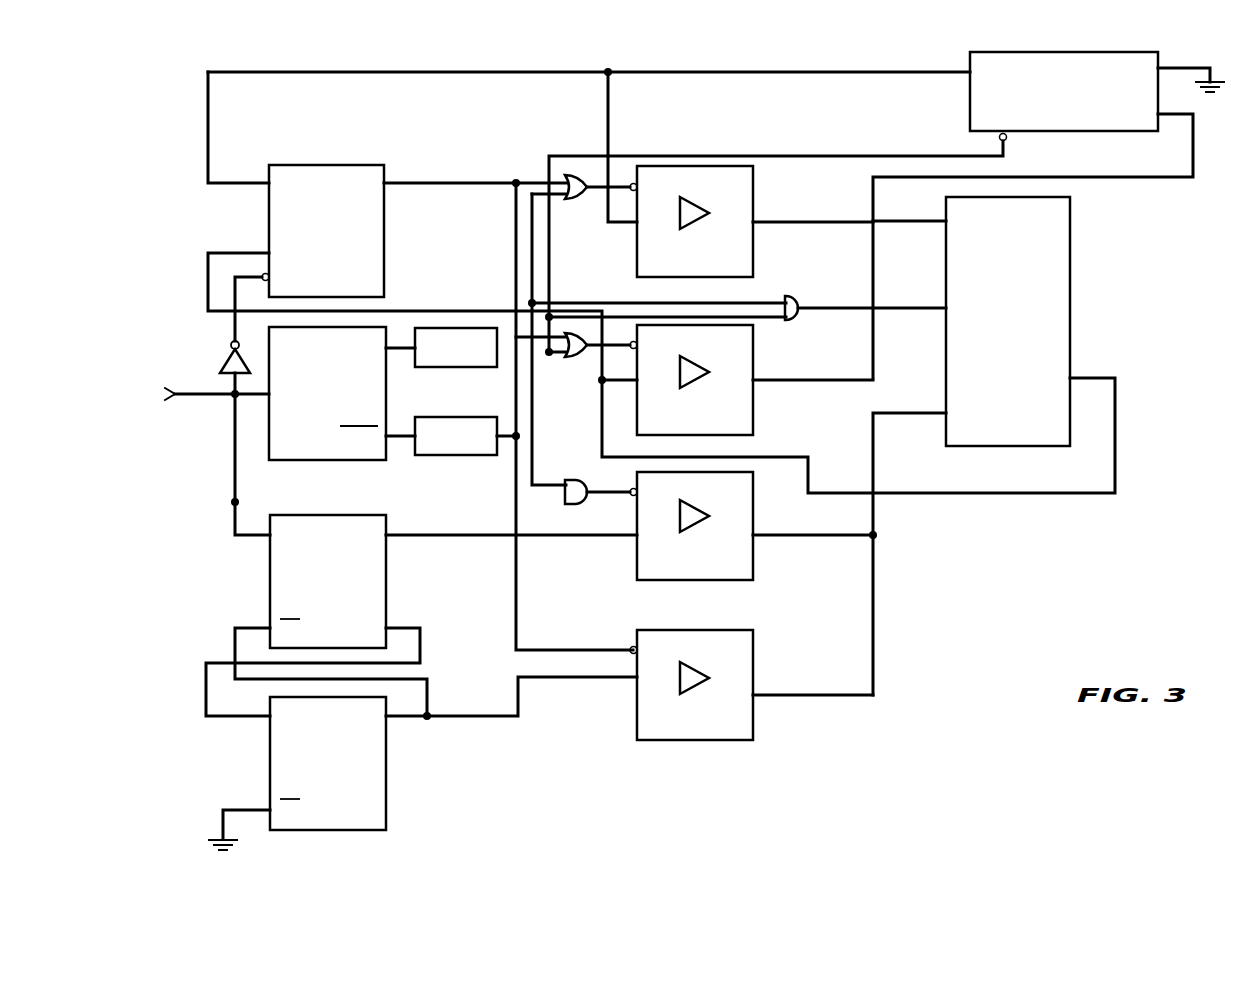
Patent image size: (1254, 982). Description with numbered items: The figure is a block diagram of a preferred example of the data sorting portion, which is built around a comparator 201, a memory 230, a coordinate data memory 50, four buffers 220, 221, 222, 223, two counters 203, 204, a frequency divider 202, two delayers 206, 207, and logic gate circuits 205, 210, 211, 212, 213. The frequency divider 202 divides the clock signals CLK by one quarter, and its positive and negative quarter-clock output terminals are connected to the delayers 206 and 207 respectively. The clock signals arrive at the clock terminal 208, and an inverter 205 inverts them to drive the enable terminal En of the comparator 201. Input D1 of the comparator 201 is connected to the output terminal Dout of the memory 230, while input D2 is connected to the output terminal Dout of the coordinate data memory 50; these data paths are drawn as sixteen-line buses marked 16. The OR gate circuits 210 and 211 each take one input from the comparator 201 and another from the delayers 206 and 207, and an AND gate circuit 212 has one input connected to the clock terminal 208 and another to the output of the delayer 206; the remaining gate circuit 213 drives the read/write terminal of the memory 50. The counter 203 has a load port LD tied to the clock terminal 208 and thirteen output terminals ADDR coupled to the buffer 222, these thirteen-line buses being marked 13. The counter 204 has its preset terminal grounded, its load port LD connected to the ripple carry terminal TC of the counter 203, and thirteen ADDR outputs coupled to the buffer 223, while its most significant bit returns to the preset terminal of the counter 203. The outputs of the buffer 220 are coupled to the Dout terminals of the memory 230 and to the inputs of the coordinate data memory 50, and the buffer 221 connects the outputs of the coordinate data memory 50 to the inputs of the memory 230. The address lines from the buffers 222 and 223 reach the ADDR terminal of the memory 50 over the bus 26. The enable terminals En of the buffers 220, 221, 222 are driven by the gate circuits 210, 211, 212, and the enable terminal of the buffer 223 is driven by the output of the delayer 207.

The 16-bit data bus 16 is at (589, 211).
The 13-bit address bus 13 is at (667, 610).
The address bus 26 is at (909, 537).
The coordinate data memory 50 is at (1043, 321).
The comparator 201 is at (326, 201).
The frequency divider 202 is at (325, 410).
The counter 203 is at (366, 581).
The counter 204 is at (366, 763).
The inverter 205 is at (203, 349).
The delayer 206 is at (459, 366).
The delayer 207 is at (459, 456).
The clock terminal 208 is at (146, 405).
The OR gate circuit 210 is at (576, 226).
The OR gate circuit 211 is at (572, 372).
The AND gate circuit 212 is at (572, 465).
The logic gate circuit 213 is at (812, 281).
The buffer 220 is at (726, 221).
The buffer 221 is at (726, 380).
The buffer 222 is at (726, 527).
The buffer 223 is at (726, 683).
The memory 230 is at (1026, 91).